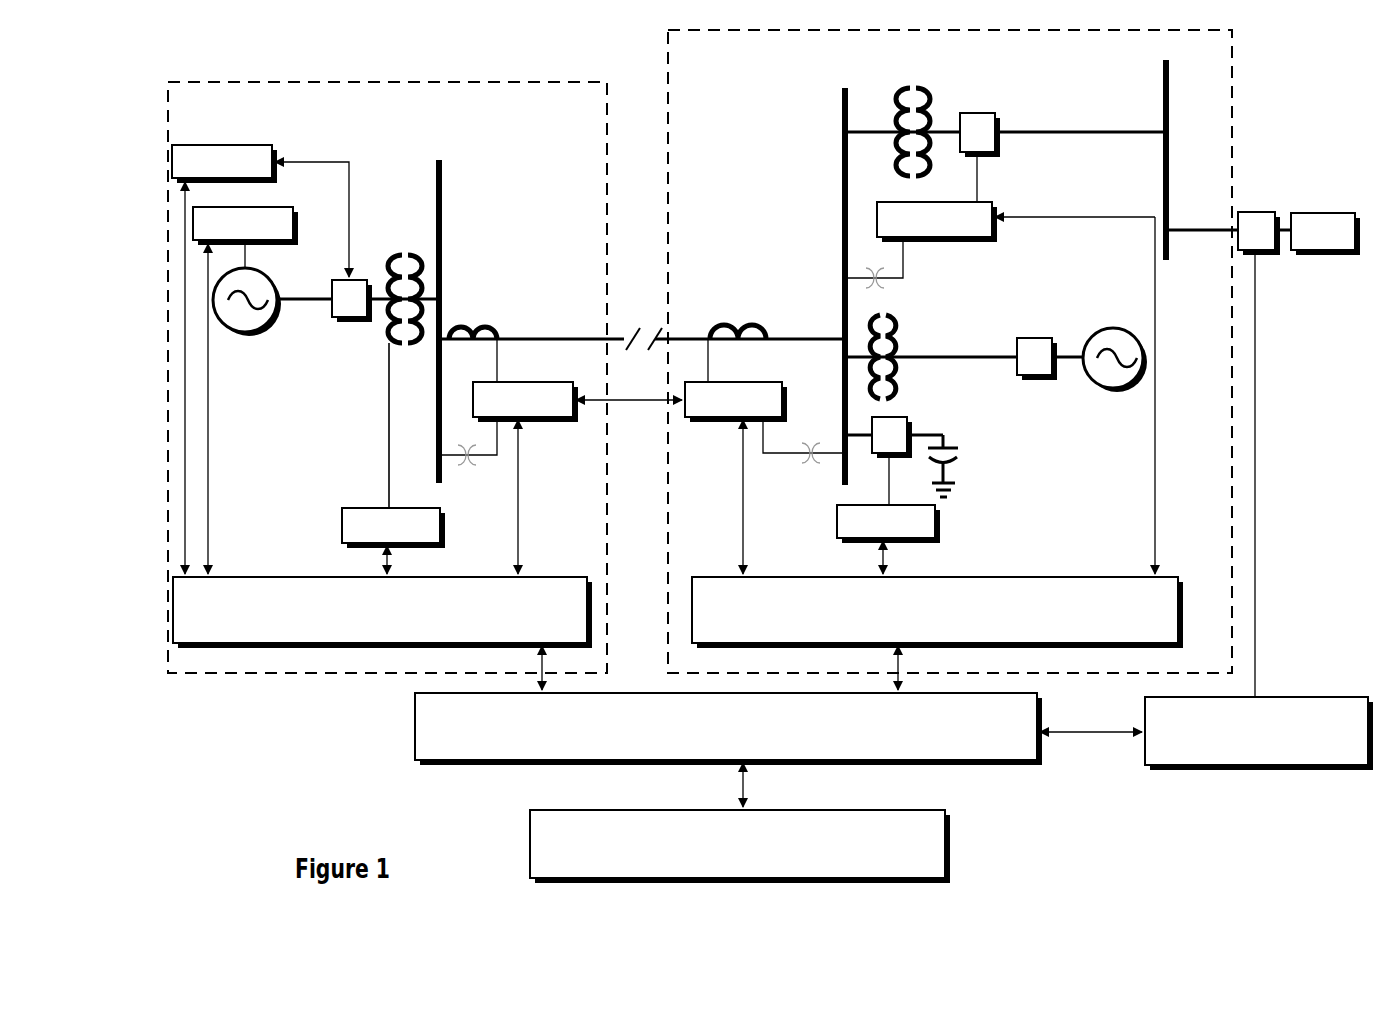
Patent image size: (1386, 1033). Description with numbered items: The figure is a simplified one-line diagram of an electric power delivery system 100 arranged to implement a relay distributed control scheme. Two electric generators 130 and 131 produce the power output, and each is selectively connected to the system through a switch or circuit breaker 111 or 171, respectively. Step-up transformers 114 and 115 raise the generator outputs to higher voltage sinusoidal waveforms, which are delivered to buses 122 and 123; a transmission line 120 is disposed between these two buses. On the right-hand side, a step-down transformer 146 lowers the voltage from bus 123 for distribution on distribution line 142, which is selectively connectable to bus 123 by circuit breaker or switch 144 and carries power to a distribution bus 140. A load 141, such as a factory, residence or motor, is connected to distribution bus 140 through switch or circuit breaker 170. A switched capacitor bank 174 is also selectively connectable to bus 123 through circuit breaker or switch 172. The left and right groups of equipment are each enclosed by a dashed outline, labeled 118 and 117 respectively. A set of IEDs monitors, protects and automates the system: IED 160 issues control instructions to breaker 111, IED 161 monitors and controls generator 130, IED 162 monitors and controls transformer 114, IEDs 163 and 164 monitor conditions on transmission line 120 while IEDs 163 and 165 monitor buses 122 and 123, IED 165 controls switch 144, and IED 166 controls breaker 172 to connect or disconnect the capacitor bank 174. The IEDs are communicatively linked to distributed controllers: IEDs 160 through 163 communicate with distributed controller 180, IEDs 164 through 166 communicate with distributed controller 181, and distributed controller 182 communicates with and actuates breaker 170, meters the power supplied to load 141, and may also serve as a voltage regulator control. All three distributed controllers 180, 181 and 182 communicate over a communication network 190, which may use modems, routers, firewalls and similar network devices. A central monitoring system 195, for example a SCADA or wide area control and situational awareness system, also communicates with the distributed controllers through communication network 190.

The electric power delivery system 100 is at (362, 776).
The circuit breaker 111 is at (353, 322).
The step-up transformer 114 is at (396, 252).
The step-up transformer 115 is at (900, 330).
The substation 117 is at (668, 85).
The substation 118 is at (368, 82).
The transmission line 120 is at (526, 336).
The bus 122 is at (442, 196).
The bus 123 is at (842, 483).
The electric generator 130 is at (250, 336).
The electric generator 131 is at (1114, 390).
The distribution bus 140 is at (1163, 163).
The load 141 is at (1322, 211).
The distribution line 142 is at (1090, 130).
The circuit breaker 144 is at (982, 112).
The step-down transformer 146 is at (905, 90).
The IED 160 is at (265, 146).
The IED 161 is at (265, 208).
The IED 162 is at (360, 506).
The IED 163 is at (550, 422).
The IED 164 is at (716, 422).
The IED 165 is at (930, 240).
The IED 166 is at (940, 527).
The circuit breaker 170 is at (1252, 210).
The circuit breaker 171 is at (1032, 336).
The circuit breaker 172 is at (907, 420).
The switched capacitor bank 174 is at (950, 448).
The distributed controller 180 is at (265, 575).
The distributed controller 181 is at (1085, 575).
The distributed controller 182 is at (1256, 770).
The communication network 190 is at (483, 766).
The central monitoring system 195 is at (950, 851).